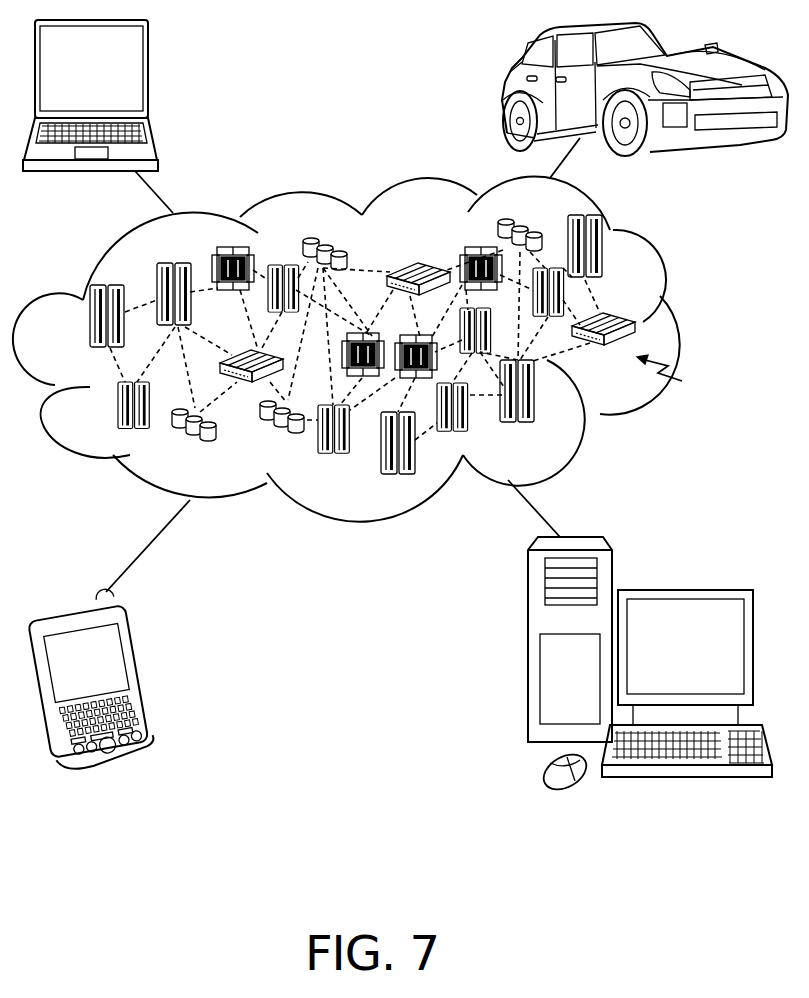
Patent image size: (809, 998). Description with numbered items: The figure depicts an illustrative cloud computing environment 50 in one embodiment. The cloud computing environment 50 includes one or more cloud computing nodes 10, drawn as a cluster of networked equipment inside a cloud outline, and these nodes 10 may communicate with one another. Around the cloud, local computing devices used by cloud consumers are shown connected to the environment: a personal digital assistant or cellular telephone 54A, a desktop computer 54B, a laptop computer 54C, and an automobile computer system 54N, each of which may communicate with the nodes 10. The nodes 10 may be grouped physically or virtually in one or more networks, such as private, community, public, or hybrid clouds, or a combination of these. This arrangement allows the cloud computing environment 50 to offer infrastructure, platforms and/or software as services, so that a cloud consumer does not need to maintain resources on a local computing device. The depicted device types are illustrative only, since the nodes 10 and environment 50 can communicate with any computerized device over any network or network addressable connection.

The cloud computing node 10 is at (674, 374).
The cloud computing environment 50 is at (686, 323).
The personal digital assistant or cellular telephone 54A is at (138, 669).
The desktop computer 54B is at (683, 589).
The laptop computer 54C is at (149, 74).
The automobile computer system 54N is at (505, 92).